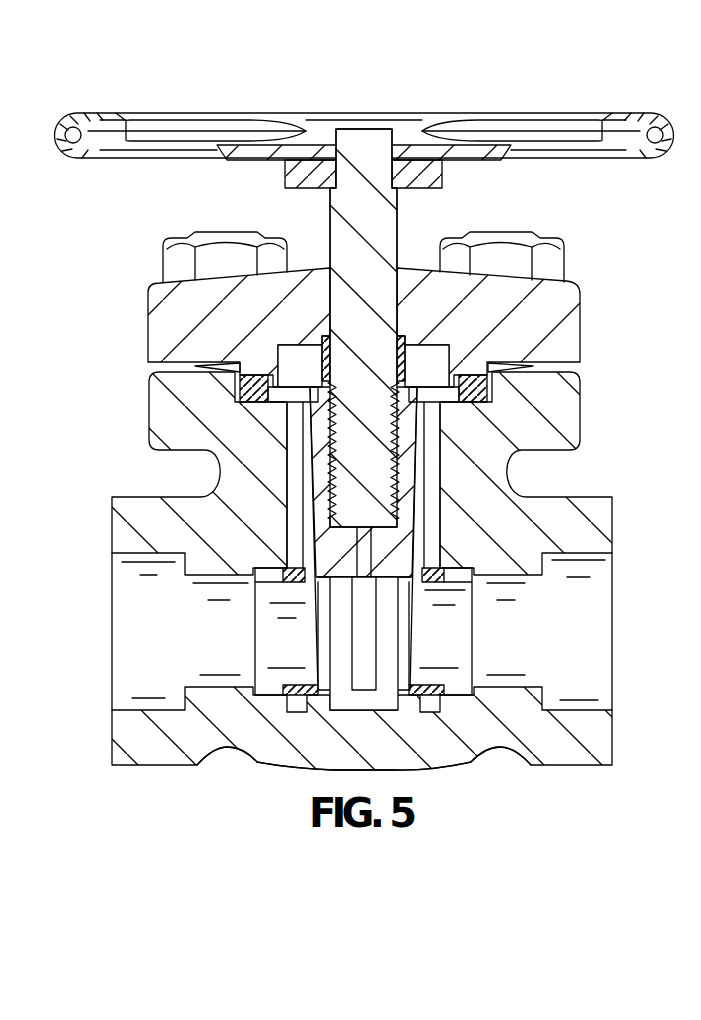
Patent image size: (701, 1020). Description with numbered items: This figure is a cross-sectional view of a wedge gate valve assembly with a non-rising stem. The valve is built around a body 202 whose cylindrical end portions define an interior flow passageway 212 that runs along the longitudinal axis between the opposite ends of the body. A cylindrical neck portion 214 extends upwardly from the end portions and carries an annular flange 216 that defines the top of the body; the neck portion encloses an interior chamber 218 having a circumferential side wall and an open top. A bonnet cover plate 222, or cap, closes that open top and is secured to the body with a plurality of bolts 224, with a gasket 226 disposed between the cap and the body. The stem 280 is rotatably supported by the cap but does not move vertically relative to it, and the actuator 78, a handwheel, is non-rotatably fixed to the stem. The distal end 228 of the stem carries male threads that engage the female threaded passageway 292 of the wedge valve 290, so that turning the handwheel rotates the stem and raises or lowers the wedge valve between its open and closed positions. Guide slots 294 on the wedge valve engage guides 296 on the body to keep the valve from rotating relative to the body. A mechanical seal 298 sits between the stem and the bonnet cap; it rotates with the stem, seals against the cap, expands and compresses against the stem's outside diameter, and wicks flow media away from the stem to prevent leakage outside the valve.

The actuator 78 is at (551, 113).
The body 202 is at (162, 767).
The interior flow passageway 212 is at (615, 641).
The neck portion 214 is at (583, 410).
The annular flange 216 is at (299, 426).
The interior chamber 218 is at (297, 532).
The bonnet cover plate 222 is at (582, 331).
The bolts 224 is at (568, 268).
The gasket 226 is at (472, 377).
The distal end of the stem 228 is at (378, 456).
The stem 280 is at (395, 367).
The wedge valve 290 is at (345, 570).
The threaded passageway 292 is at (307, 507).
The guide slots 294 is at (364, 551).
The guides 296 is at (367, 637).
The mechanical seal 298 is at (318, 339).